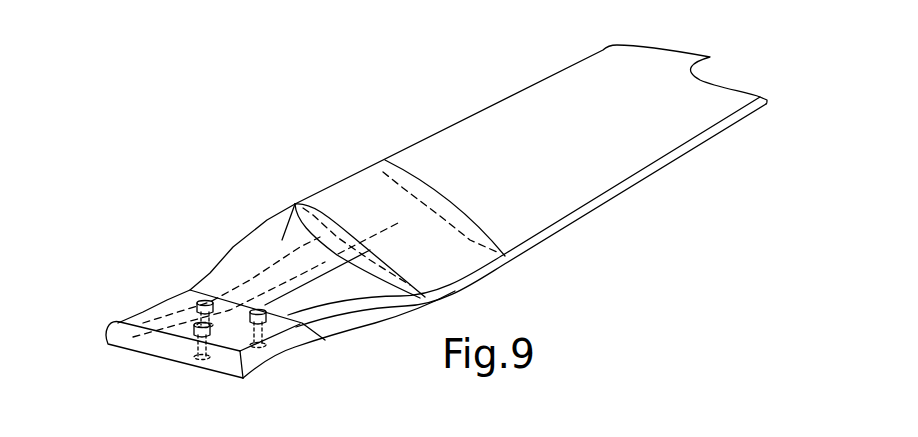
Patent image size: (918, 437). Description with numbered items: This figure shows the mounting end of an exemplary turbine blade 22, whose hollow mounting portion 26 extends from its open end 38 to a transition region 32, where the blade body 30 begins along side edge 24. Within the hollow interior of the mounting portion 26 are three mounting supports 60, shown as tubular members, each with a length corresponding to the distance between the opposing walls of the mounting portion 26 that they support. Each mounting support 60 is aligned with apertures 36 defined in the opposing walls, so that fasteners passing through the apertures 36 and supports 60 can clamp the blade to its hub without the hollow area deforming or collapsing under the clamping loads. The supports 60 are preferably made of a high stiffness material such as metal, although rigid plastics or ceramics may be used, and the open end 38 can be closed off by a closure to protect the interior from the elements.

The leaf spring 22 is at (528, 88).
The side edge of leaf spring 24 is at (697, 146).
The mounting portion 26 is at (137, 315).
The curved transition portion 30 is at (457, 143).
The transition region 32 is at (297, 205).
The apertures 36 is at (262, 305).
The open end 38 is at (135, 357).
The mounting supports 60 is at (210, 313).